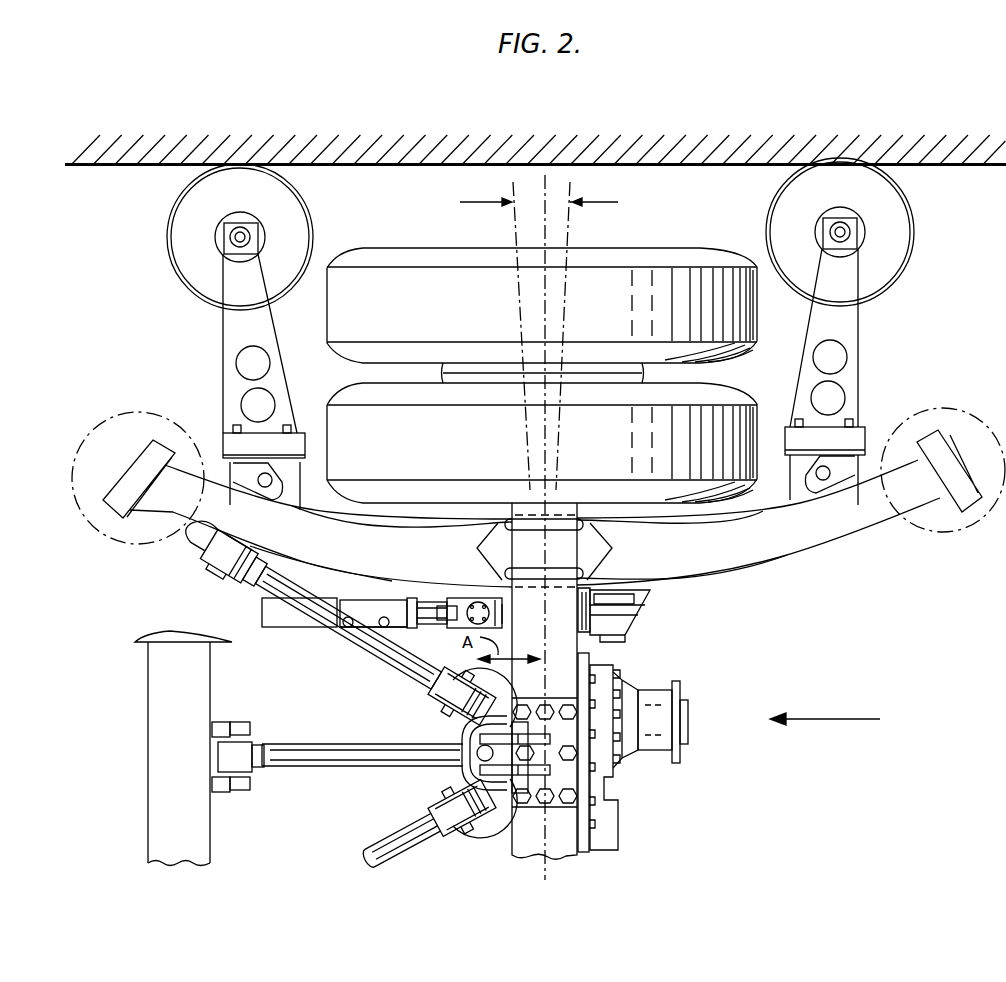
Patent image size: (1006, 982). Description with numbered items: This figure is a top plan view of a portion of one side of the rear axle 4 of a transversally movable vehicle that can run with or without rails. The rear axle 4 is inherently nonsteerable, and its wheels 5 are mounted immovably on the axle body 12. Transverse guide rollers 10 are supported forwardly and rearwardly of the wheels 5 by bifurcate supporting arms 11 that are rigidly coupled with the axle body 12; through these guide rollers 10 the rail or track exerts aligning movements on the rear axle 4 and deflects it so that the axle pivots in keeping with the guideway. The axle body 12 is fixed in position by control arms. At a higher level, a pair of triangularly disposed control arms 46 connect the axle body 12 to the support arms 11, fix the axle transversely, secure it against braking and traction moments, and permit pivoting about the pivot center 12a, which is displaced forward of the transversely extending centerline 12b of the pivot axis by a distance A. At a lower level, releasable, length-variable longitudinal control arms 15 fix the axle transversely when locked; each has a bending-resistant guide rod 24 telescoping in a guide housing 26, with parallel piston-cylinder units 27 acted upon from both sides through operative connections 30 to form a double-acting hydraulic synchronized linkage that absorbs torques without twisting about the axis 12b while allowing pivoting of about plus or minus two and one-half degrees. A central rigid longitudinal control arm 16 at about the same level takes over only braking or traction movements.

The rear axle 4 is at (585, 647).
The wheels 5 is at (723, 323).
The guide rollers 10 is at (200, 270).
The supporting arms 11 is at (237, 330).
The axle body 12 is at (567, 823).
The pivot center 12a is at (455, 740).
The centerline of the pivot axis 12b is at (543, 217).
The longitudinal control arms 15 is at (363, 600).
The rigid longitudinal control arm 16 is at (338, 758).
The guide rod 24 is at (417, 600).
The guide housing 26 is at (446, 600).
The piston-cylinder units 27 is at (400, 627).
The operative connections 30 is at (382, 626).
The triangularly disposed control arms 46 is at (318, 632).